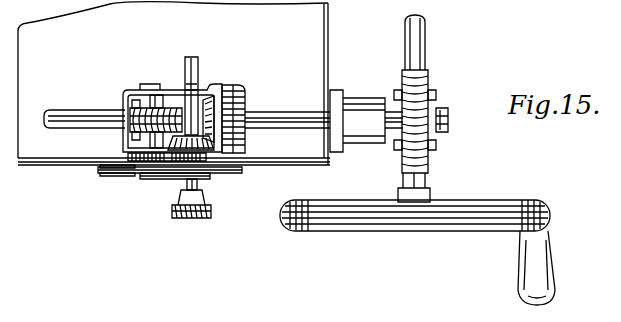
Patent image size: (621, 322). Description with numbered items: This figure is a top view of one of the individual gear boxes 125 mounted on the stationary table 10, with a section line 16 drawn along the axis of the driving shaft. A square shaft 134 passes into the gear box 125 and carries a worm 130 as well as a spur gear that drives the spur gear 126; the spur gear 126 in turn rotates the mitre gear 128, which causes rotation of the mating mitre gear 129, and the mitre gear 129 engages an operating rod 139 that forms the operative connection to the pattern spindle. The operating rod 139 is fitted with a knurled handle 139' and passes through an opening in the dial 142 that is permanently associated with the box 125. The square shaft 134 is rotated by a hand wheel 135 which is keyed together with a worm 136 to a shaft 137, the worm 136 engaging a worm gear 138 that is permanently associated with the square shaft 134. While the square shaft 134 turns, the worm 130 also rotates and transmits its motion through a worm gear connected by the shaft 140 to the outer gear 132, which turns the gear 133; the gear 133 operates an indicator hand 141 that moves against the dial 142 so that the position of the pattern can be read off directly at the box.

The stationary table 10 is at (174, 83).
The section line of shaft axis 16 is at (123, 143).
The gear box 125 is at (200, 92).
The spur gear 126 is at (244, 97).
The mitre gear 128 is at (216, 103).
The mitre gear 129 is at (240, 163).
The worm 130 is at (122, 146).
The outer gear 132 is at (133, 173).
The gear 133 is at (217, 157).
The square shaft 134 is at (53, 115).
The hand wheel 135 is at (447, 212).
The worm 136 is at (433, 92).
The shaft 137 is at (422, 44).
The worm gear 138 is at (430, 78).
The operating rod 139 is at (231, 225).
The knurled handle 139' is at (198, 240).
The shaft 140 is at (137, 160).
The indicator hand 141 is at (160, 182).
The dial 142 is at (133, 168).